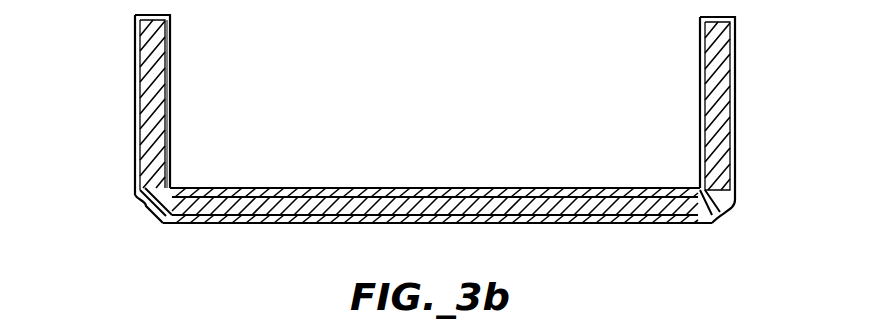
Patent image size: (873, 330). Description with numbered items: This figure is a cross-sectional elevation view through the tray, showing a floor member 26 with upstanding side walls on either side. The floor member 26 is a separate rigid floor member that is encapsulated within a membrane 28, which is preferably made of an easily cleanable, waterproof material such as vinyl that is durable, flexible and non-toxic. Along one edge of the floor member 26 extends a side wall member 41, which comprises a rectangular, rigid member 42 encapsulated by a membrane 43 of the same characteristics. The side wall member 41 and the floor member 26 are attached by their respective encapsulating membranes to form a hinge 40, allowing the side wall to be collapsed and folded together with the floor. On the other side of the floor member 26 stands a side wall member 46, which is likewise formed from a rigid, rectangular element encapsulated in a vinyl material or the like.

The floor member 26 is at (267, 207).
The membrane 28 is at (436, 188).
The hinge 40 is at (150, 205).
The side wall member 41 is at (108, 147).
The rigid member 42 is at (147, 93).
The membrane 43 is at (165, 73).
The side wall member 46 is at (748, 95).